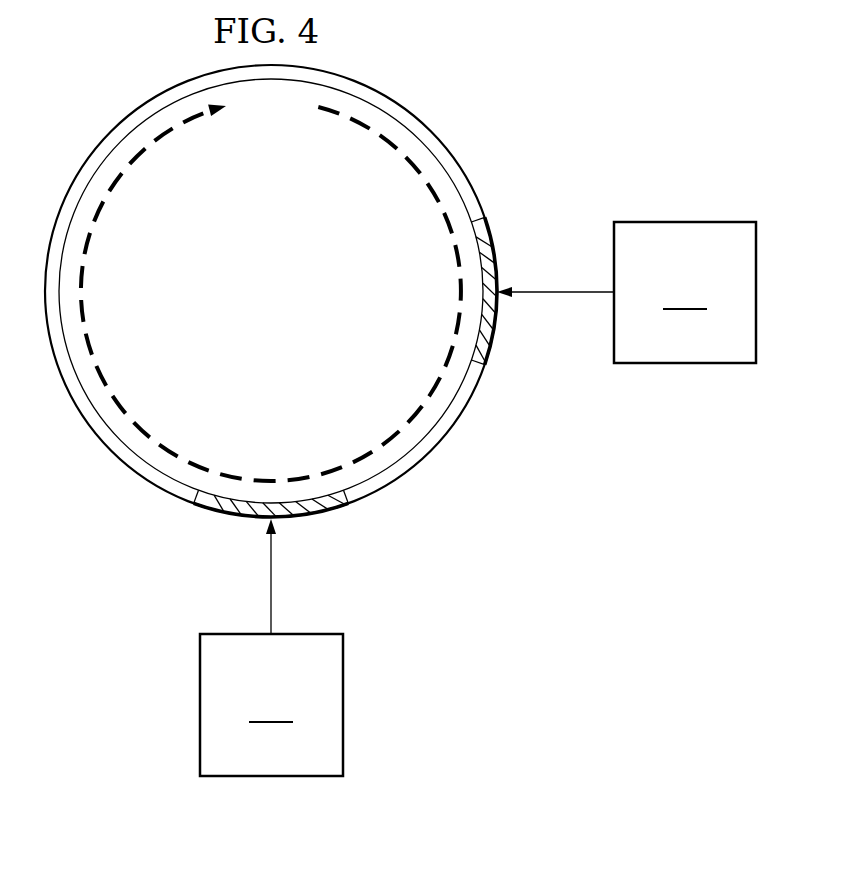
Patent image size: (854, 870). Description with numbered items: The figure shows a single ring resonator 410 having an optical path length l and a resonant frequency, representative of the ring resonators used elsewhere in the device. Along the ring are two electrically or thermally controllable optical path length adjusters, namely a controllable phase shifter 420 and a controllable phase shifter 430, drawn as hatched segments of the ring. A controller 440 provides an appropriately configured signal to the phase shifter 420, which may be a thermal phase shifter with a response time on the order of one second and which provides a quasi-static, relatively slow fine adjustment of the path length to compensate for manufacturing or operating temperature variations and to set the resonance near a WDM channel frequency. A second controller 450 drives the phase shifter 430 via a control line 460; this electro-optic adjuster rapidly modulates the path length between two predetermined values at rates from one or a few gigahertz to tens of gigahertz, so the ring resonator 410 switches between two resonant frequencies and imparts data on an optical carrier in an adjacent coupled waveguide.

The ring resonator 410 is at (106, 131).
The controllable phase shifter 420 is at (215, 500).
The controllable phase shifter 430 is at (495, 327).
The controller 440 is at (271, 647).
The controller 450 is at (685, 292).
The control line 460 is at (552, 290).